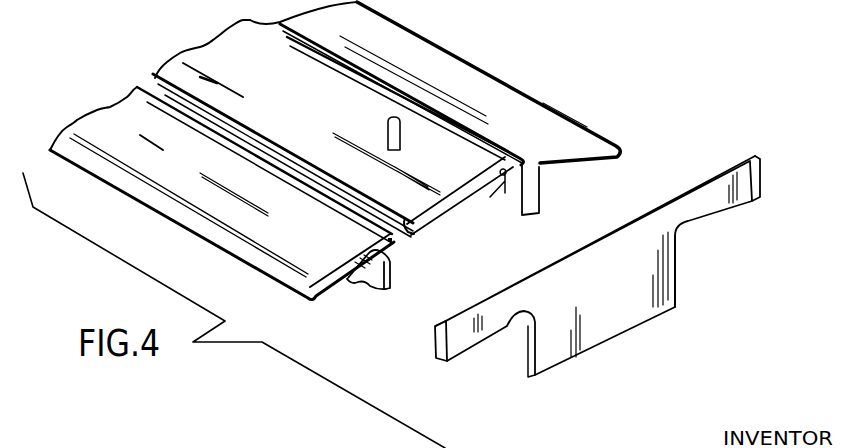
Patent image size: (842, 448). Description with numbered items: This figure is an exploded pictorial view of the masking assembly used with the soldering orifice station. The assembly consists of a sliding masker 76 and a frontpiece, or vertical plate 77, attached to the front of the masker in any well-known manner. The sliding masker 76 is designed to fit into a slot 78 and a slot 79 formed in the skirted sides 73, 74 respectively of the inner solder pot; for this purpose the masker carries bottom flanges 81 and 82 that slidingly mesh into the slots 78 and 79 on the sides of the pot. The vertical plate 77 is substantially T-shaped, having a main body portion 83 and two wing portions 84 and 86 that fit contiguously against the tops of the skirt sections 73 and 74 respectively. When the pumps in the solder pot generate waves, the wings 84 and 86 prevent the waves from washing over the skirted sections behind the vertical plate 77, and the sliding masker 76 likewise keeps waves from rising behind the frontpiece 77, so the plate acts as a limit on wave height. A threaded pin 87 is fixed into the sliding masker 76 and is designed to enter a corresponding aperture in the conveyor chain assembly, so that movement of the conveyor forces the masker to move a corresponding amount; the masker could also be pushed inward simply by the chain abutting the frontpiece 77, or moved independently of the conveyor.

The skirted side 73 is at (238, 200).
The skirted side 74 is at (435, 110).
The sliding masker 76 is at (335, 141).
The vertical plate 77 is at (597, 254).
The slot 78 is at (397, 241).
The slot 79 is at (539, 189).
The bottom flange 81 is at (413, 233).
The bottom flange 82 is at (506, 176).
The main body portion 83 is at (673, 272).
The wing portion 84 is at (472, 305).
The wing portion 86 is at (700, 188).
The threaded pin 87 is at (397, 119).